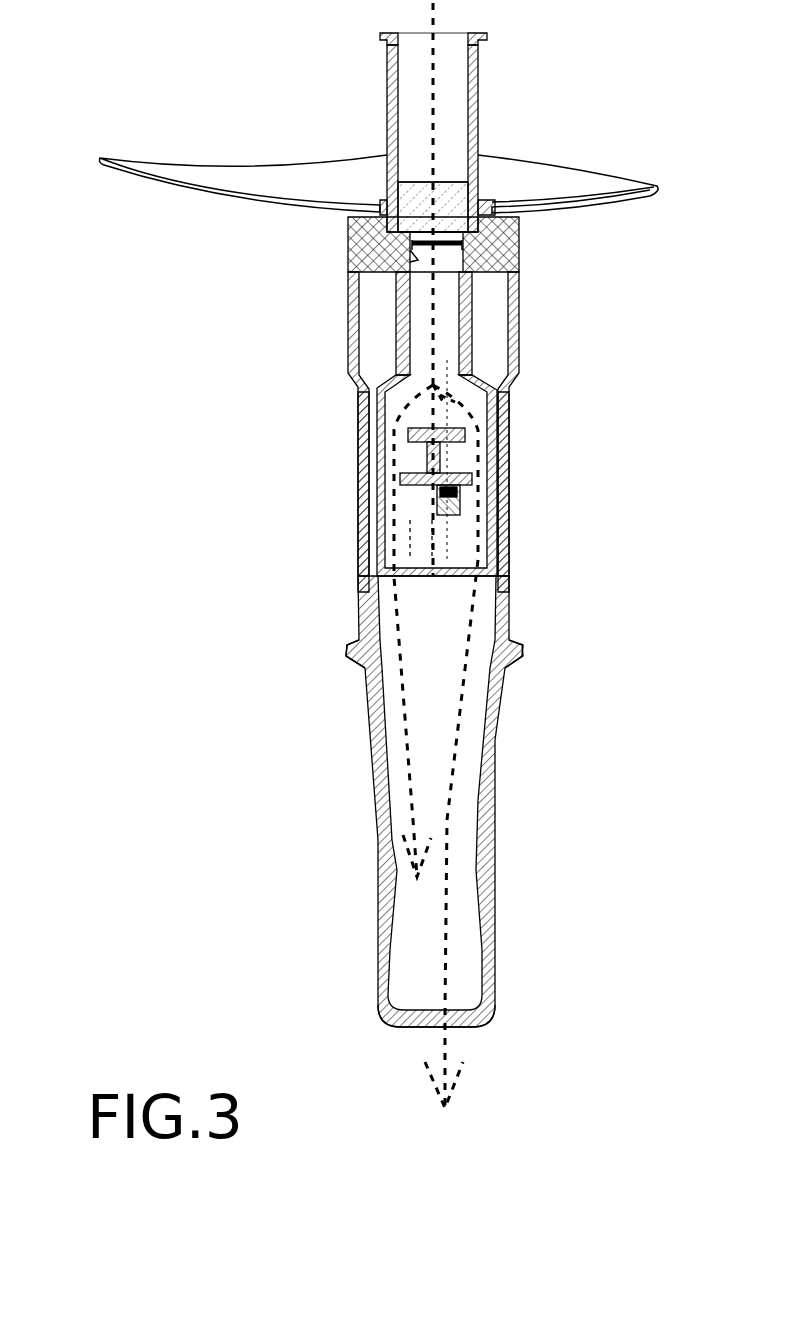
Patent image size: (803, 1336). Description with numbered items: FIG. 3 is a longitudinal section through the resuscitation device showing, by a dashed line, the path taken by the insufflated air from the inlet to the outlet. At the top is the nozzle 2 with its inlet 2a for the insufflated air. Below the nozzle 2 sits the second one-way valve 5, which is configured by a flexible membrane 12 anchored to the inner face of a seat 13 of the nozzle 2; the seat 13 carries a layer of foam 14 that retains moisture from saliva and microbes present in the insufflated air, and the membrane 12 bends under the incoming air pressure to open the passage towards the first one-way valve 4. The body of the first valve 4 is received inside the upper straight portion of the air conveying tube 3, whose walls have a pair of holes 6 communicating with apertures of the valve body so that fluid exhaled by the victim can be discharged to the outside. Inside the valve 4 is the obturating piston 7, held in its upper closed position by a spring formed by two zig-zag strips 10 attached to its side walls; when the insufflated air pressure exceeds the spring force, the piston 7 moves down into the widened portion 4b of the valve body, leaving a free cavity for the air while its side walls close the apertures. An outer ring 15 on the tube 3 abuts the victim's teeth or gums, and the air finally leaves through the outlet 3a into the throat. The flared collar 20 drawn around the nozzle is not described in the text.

The nozzle 2 is at (473, 107).
The inlet 2a is at (420, 35).
The layer of foam 14 is at (455, 200).
The funnel disk 20 is at (218, 197).
The seat 13 is at (410, 235).
The membrane 12 is at (463, 246).
The second one-way valve 5 is at (417, 257).
The first one-way valve 4 is at (493, 352).
The widened portion of the valve body 4b is at (370, 415).
The holes 6 is at (363, 433).
The obturating piston 7 is at (432, 457).
The zig-zag strips 10 is at (450, 497).
The outer ring 15 is at (513, 643).
The air conveying tube 3 is at (370, 732).
The outlet 3a is at (400, 1022).